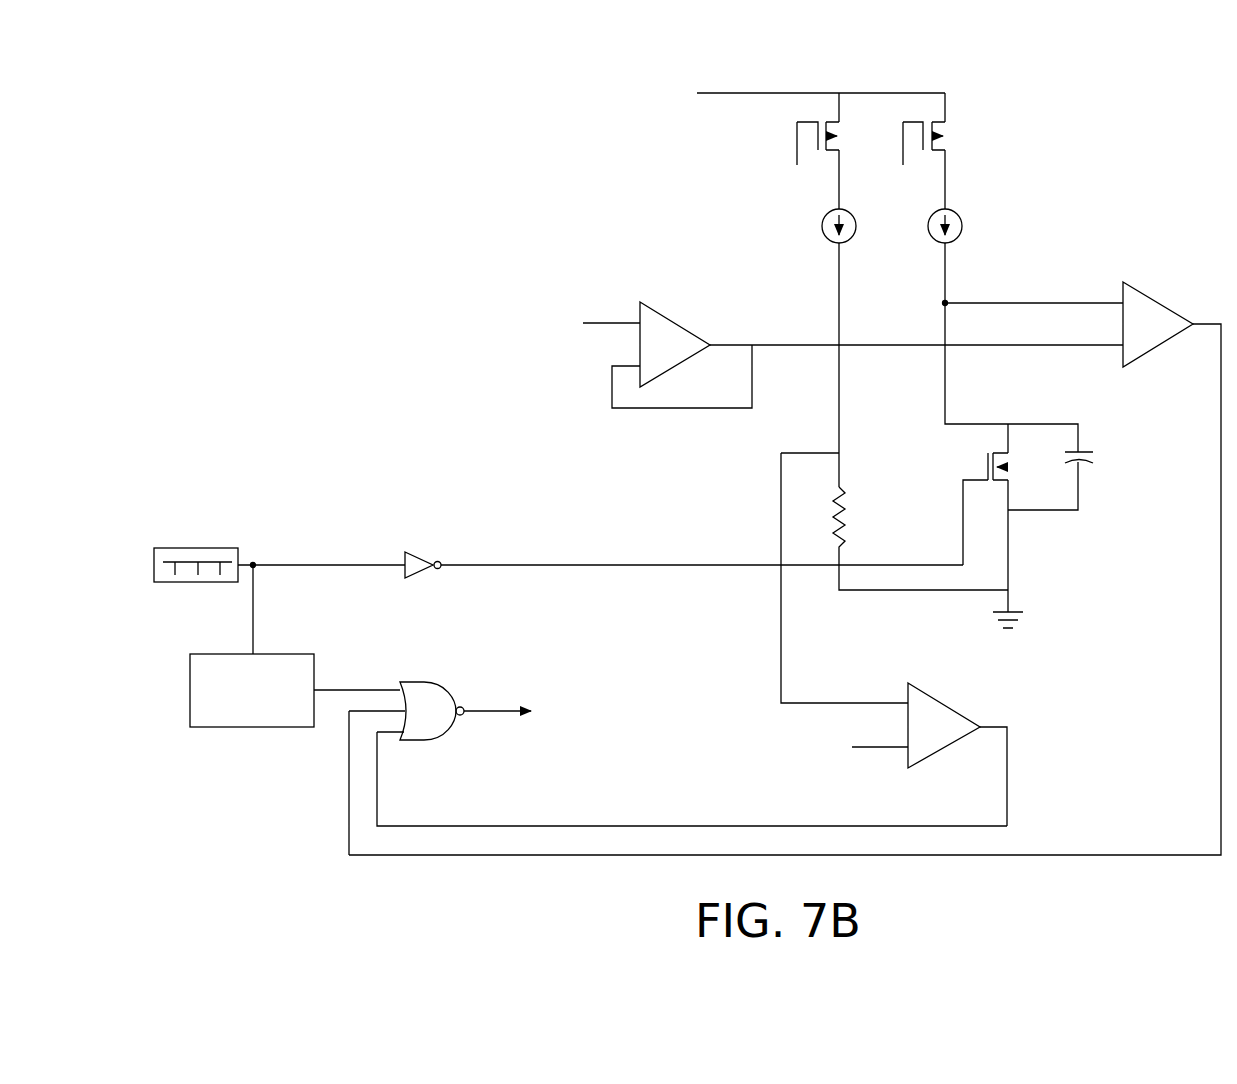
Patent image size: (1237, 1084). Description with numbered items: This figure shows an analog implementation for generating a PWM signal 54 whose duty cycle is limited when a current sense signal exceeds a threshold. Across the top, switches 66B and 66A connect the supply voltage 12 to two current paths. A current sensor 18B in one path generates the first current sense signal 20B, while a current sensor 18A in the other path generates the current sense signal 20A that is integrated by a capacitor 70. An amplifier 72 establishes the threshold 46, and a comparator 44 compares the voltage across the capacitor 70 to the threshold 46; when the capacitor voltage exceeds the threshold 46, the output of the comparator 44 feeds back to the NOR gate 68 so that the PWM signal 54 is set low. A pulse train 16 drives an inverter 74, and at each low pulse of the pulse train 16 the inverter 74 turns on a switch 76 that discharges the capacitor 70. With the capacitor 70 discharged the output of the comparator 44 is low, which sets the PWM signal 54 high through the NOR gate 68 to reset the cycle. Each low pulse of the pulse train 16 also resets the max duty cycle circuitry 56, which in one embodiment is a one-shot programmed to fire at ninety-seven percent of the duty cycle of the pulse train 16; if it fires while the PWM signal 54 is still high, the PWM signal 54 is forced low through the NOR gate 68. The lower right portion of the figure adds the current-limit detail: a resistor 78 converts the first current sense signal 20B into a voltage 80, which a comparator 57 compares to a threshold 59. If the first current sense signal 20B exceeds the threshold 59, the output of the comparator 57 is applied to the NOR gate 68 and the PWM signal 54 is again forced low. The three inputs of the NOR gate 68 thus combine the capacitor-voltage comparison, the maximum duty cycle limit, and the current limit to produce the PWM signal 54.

The supply voltage 12 is at (762, 94).
The switch 66B is at (854, 138).
The switch 66A is at (961, 138).
The current sensor 18B is at (822, 226).
The current sensor 18A is at (962, 226).
The first current sense signal 20B is at (838, 283).
The current sense signal 20A is at (943, 277).
The amplifier 72 is at (672, 318).
The threshold 46 is at (805, 354).
The comparator 44 is at (1149, 295).
The resistor 78 is at (872, 516).
The switch 76 is at (971, 469).
The capacitor 70 is at (1122, 460).
The voltage 80 is at (780, 595).
The pulse train 16 is at (308, 559).
The inverter 74 is at (414, 550).
The max duty cycle circuitry 56 is at (254, 735).
The NOR gate 68 is at (414, 677).
The PWM signal 54 is at (489, 707).
The comparator 57 is at (944, 697).
The threshold 59 is at (862, 752).